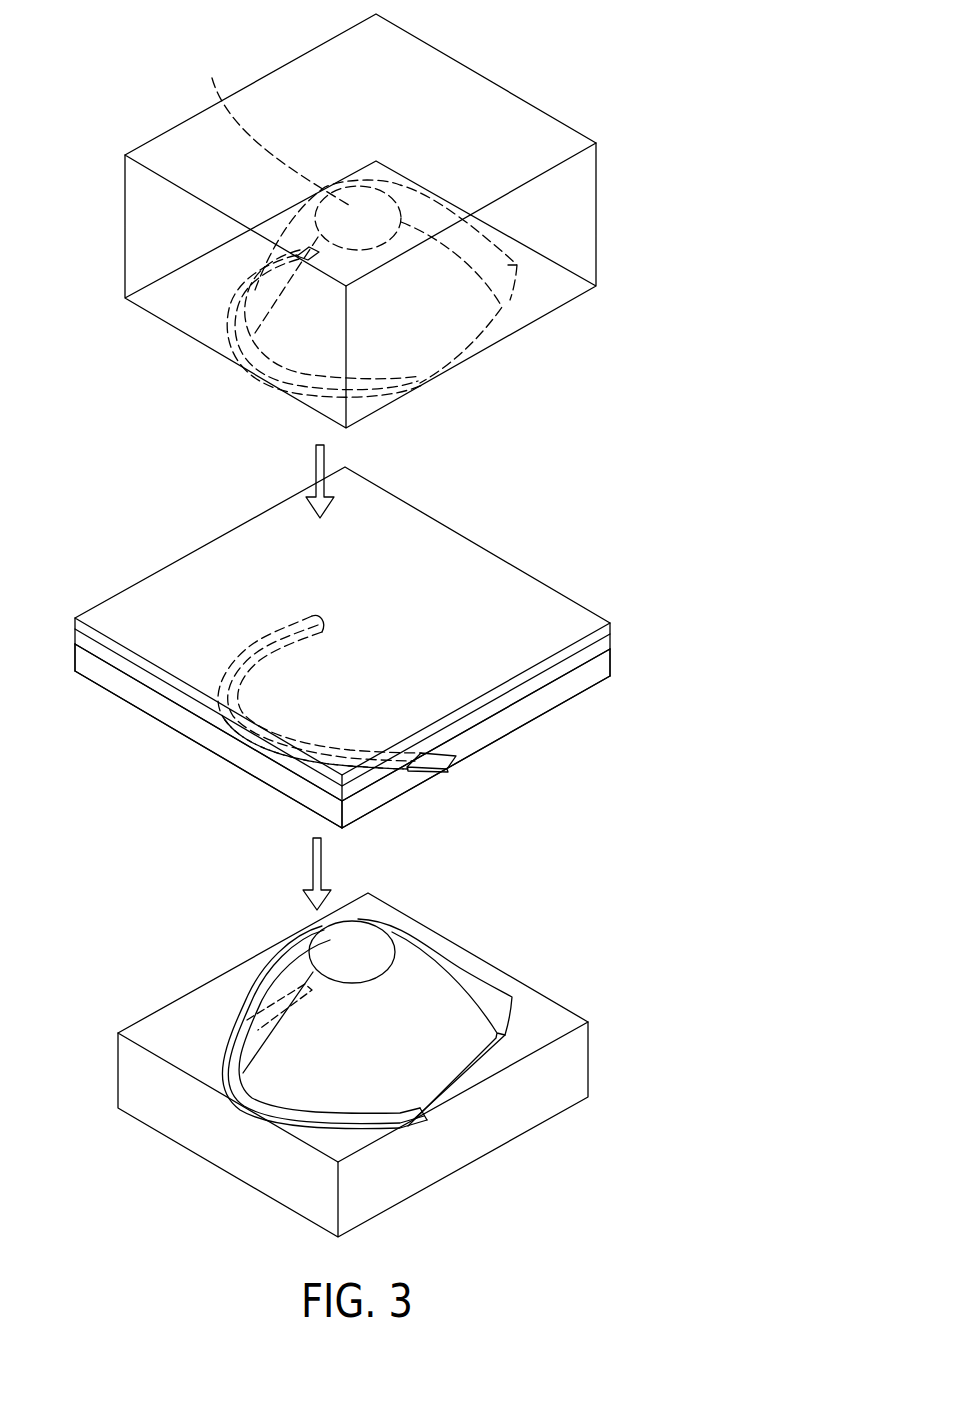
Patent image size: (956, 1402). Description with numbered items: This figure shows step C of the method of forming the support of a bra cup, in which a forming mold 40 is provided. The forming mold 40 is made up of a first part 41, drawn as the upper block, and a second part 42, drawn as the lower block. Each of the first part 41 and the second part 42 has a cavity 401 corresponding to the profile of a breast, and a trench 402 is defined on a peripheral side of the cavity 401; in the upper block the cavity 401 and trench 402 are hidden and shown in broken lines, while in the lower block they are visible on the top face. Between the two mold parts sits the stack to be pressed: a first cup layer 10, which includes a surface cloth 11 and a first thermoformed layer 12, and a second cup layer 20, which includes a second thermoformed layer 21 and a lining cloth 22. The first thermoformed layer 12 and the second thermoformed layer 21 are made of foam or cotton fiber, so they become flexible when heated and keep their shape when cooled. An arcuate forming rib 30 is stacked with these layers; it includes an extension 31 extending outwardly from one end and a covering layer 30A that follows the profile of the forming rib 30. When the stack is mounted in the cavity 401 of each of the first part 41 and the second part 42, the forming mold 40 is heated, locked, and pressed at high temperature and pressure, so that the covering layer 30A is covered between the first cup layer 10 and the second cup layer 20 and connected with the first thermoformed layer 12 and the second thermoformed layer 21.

The first cup layer 10 is at (483, 548).
The surface cloth 11 is at (612, 622).
The first thermoformed layer 12 is at (610, 641).
The second cup layer 20 is at (102, 687).
The second thermoformed layer 21 is at (607, 666).
The lining cloth 22 is at (597, 683).
The forming rib 30 is at (284, 753).
The covering layer 30A is at (248, 635).
The extension 31 is at (457, 764).
The forming mold 40 is at (596, 198).
The first part 41 is at (478, 119).
The cavity 401 is at (293, 962).
The trench 402 is at (222, 326).
The second part 42 is at (553, 1022).